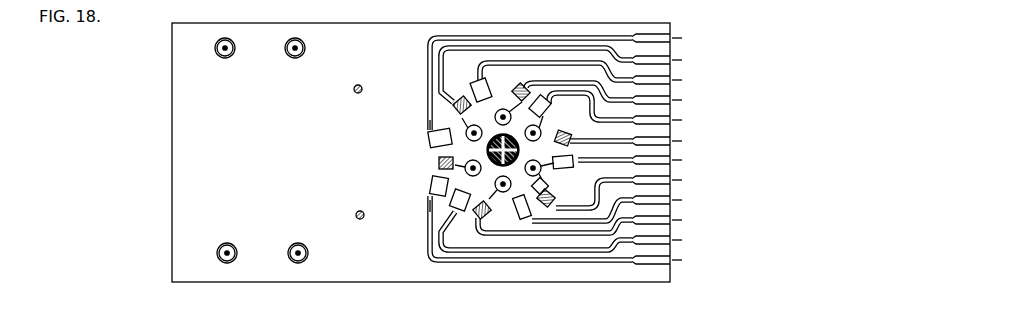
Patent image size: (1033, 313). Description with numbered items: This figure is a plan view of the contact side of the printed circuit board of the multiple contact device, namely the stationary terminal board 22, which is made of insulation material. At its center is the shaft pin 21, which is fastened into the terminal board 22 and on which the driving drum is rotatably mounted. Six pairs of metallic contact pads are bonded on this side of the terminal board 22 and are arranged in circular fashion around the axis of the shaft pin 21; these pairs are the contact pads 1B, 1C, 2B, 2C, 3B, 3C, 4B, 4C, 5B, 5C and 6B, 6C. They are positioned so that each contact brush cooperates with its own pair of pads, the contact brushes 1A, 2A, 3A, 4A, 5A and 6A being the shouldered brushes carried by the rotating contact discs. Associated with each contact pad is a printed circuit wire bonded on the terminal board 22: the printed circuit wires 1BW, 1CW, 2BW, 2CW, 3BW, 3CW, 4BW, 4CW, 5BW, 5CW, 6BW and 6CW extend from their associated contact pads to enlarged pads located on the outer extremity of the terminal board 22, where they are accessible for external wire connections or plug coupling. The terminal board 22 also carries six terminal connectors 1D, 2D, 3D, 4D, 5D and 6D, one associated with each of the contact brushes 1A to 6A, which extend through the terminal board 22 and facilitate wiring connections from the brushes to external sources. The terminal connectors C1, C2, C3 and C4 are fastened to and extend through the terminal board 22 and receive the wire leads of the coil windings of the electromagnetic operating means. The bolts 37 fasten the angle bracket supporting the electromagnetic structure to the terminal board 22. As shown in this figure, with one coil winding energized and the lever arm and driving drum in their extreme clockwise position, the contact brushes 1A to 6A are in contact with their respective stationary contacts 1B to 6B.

The shaft pin 21 is at (486, 150).
The terminal board 22 is at (409, 275).
The bolts 37 is at (358, 85).
The terminal connector C1 is at (224, 51).
The terminal connector C2 is at (296, 51).
The terminal connector C3 is at (227, 250).
The terminal connector C4 is at (298, 250).
The contact brush 1A is at (572, 136).
The contact pad 1B is at (567, 131).
The contact pad 1C is at (546, 114).
The terminal connector 1D is at (526, 122).
The contact brush 2A is at (519, 86).
The contact pad 2B is at (490, 83).
The contact pad 2C is at (489, 66).
The terminal connector 2D is at (499, 113).
The contact brush 3A is at (454, 104).
The contact pad 3B is at (432, 132).
The contact pad 3C is at (431, 142).
The terminal connector 3D is at (460, 125).
The contact brush 4A is at (438, 164).
The contact pad 4B is at (431, 186).
The contact pad 4C is at (430, 209).
The terminal connector 4D is at (474, 178).
The contact brush 5A is at (486, 219).
The contact pad 5B is at (470, 213).
The contact pad 5C is at (511, 211).
The terminal connector 5D is at (514, 187).
The contact brush 6A is at (548, 206).
The contact pad 6B is at (560, 199).
The contact pad 6C is at (546, 177).
The terminal connector 6D is at (574, 161).
The printed circuit wire 3CW is at (577, 79).
The printed circuit wire 3BW is at (582, 75).
The printed circuit wire 2CW is at (602, 76).
The printed circuit wire 2BW is at (625, 96).
The printed circuit wire 1CW is at (636, 111).
The printed circuit wire 1BW is at (646, 141).
The printed circuit wire 6CW is at (651, 160).
The printed circuit wire 6BW is at (640, 189).
The printed circuit wire 5CW is at (628, 206).
The printed circuit wire 5BW is at (601, 222).
The printed circuit wire 4CW is at (583, 231).
The printed circuit wire 4BW is at (577, 233).